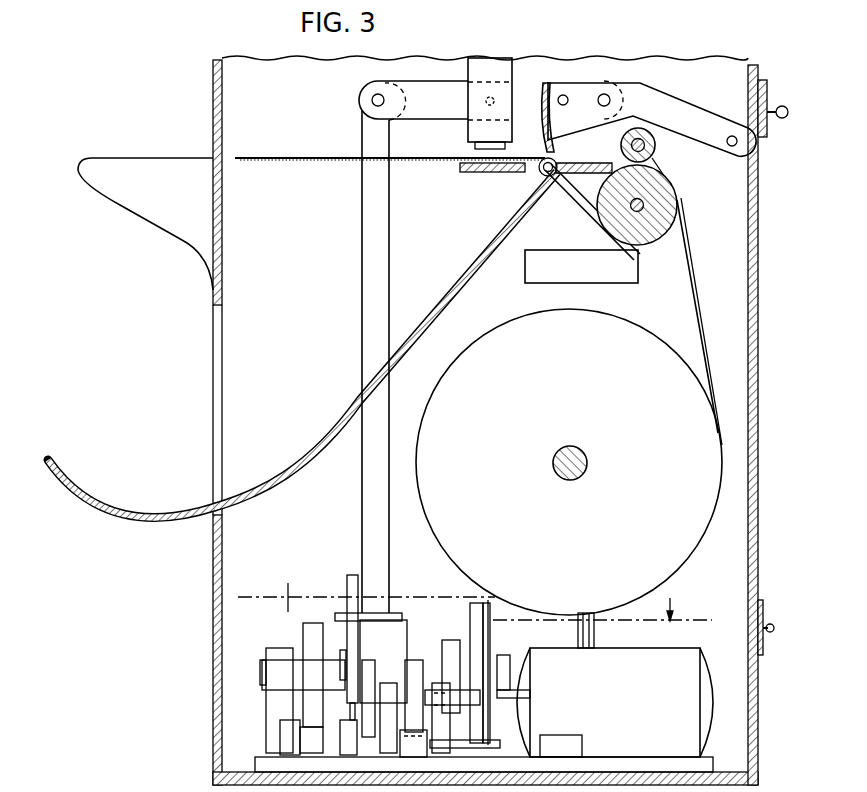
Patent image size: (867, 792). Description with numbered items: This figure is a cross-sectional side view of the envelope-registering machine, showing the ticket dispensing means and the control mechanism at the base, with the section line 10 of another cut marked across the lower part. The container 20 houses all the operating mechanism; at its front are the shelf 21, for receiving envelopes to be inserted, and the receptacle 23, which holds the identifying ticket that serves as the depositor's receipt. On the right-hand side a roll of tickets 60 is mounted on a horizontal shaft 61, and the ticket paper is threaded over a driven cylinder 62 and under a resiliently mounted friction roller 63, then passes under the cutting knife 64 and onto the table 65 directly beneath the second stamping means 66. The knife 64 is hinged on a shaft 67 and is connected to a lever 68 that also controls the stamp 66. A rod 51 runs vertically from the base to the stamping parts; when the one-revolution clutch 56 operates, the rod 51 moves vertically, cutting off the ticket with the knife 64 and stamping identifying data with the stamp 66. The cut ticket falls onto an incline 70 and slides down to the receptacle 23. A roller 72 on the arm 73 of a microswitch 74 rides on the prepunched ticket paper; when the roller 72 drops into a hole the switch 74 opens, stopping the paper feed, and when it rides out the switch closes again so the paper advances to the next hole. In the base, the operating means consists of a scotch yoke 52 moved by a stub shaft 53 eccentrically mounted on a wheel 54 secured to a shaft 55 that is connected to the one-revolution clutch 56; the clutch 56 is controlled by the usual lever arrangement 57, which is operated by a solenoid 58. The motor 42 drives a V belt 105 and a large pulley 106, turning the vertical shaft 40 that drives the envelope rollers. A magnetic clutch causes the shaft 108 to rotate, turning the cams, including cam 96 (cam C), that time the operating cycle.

The section line 10 is at (475, 602).
The container 20 is at (213, 88).
The shelf 21 is at (114, 159).
The receptacle 23 is at (86, 484).
The vertical shaft 40 is at (594, 637).
The motor 42 is at (680, 660).
The rod 51 is at (389, 275).
The scotch yoke 52 is at (349, 590).
The stub shaft 53 is at (343, 668).
The wheel 54 is at (367, 660).
The shaft 55 is at (386, 683).
The one-revolution clutch 56 is at (412, 660).
The lever arrangement 57 is at (418, 749).
The solenoid 58 is at (582, 746).
The roll of tickets 60 is at (627, 508).
The horizontal shaft 61 is at (558, 447).
The driven cylinder 62 is at (676, 200).
The friction roller 63 is at (652, 147).
The cutting knife 64 is at (552, 146).
The table 65 is at (484, 174).
The second stamping means 66 is at (472, 128).
The shaft 67 is at (733, 136).
The lever 68 is at (430, 110).
The incline 70 is at (342, 400).
The roller 72 is at (540, 170).
The arm 73 is at (582, 221).
The microswitch 74 is at (636, 271).
The cam 96 is at (310, 694).
The V belt 105 is at (488, 637).
The large pulley 106 is at (470, 612).
The shaft 108 is at (294, 668).